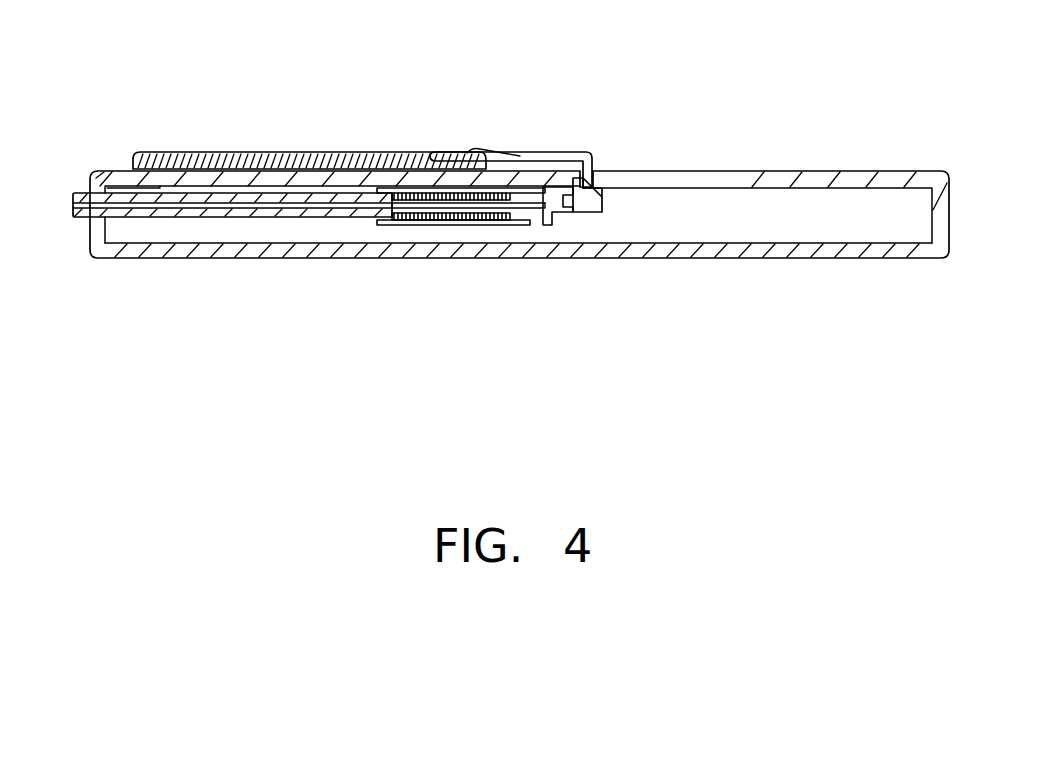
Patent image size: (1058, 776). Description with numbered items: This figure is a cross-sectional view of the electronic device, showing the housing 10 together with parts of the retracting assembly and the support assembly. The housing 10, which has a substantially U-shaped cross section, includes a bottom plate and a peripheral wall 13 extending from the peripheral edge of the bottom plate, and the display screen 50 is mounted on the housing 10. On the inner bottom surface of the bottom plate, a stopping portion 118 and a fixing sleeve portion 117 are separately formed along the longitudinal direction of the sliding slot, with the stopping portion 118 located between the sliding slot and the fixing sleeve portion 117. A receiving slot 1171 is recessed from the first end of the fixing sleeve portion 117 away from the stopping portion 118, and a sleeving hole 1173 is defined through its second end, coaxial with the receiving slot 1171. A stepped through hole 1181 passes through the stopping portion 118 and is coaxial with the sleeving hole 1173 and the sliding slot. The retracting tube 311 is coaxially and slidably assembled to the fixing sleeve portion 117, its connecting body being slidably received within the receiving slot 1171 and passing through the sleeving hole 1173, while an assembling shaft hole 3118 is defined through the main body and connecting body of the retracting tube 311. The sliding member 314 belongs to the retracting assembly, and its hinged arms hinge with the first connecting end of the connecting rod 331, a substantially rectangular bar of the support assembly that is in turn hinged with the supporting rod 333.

The housing 10 is at (125, 177).
The peripheral wall 13 is at (102, 233).
The display screen 50 is at (765, 248).
The fixing sleeve portion 117 is at (445, 114).
The receiving slot 1171 is at (345, 195).
The sleeving hole 1173 is at (513, 193).
The stopping portion 118 is at (560, 223).
The stepped through hole 1181 is at (548, 223).
The retracting tube 311 is at (323, 205).
The assembling shaft hole 3118 is at (183, 203).
The sliding member 314 is at (593, 200).
The connecting rod 331 is at (527, 152).
The supporting rod 333 is at (227, 153).